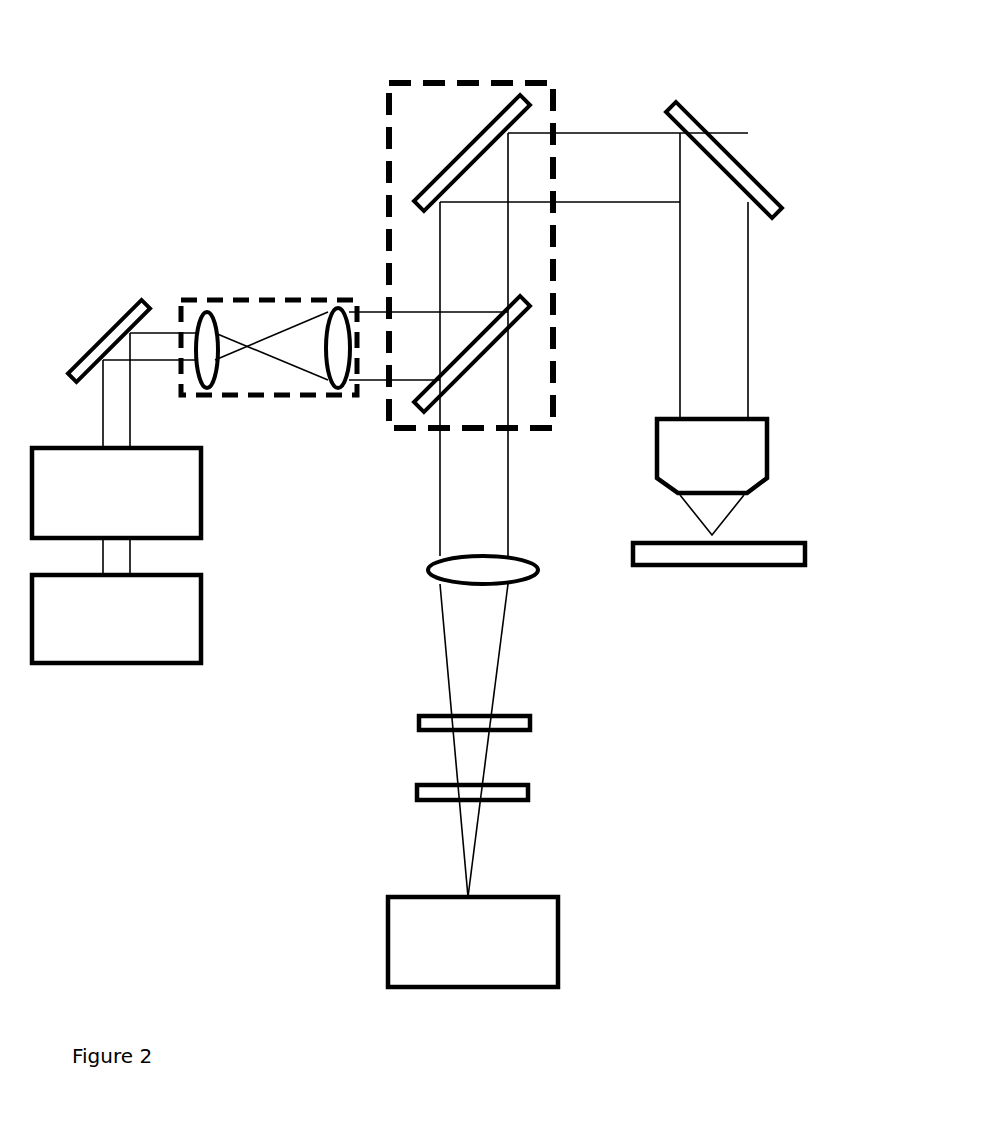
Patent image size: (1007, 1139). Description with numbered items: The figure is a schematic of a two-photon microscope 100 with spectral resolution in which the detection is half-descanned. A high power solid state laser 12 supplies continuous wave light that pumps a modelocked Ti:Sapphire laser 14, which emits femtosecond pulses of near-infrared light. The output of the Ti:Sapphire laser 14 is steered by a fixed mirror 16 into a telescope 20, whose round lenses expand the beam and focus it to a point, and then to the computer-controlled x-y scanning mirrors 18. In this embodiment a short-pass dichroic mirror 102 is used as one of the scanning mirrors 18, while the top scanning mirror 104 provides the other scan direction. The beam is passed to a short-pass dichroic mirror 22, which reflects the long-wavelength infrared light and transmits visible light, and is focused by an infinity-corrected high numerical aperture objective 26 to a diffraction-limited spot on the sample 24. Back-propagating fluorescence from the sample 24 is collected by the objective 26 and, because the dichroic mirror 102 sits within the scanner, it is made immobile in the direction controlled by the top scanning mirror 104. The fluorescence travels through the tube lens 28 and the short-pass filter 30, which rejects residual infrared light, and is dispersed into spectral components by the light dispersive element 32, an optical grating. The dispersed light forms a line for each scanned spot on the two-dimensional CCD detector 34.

The microscope 100 is at (176, 168).
The solid state laser 12 is at (203, 618).
The Ti:Sapphire laser 14 is at (203, 492).
The fixed mirror 16 is at (100, 334).
The x-y scanning mirrors 18 is at (556, 102).
The telescope 20 is at (282, 400).
The short-pass dichroic mirror 22 is at (725, 150).
The sample 24 is at (633, 553).
The objective 26 is at (765, 447).
The tube lens 28 is at (428, 566).
The short-pass filter 30 is at (530, 723).
The light dispersive element 32 is at (528, 792).
The CCD detector 34 is at (558, 945).
The short-pass dichroic mirror 102 is at (523, 316).
The top scanning mirror 104 is at (452, 162).